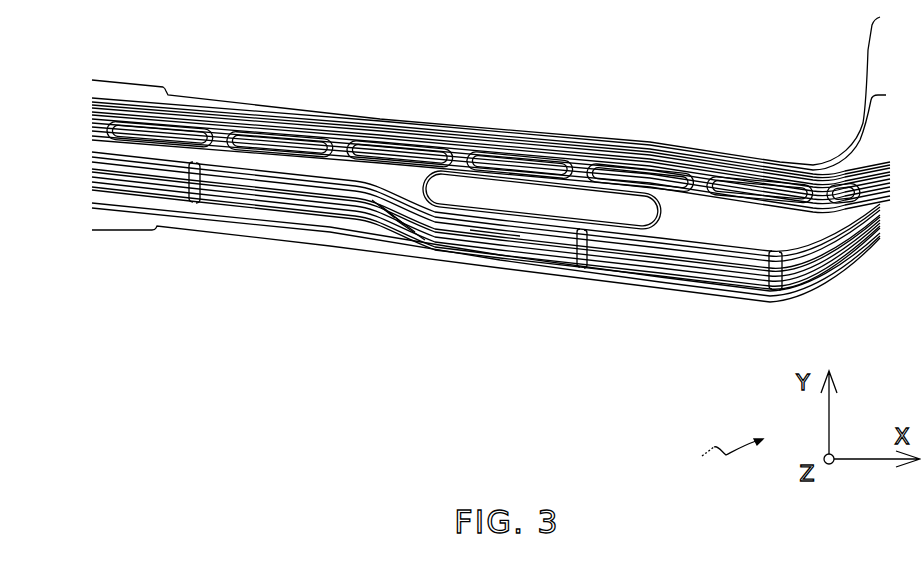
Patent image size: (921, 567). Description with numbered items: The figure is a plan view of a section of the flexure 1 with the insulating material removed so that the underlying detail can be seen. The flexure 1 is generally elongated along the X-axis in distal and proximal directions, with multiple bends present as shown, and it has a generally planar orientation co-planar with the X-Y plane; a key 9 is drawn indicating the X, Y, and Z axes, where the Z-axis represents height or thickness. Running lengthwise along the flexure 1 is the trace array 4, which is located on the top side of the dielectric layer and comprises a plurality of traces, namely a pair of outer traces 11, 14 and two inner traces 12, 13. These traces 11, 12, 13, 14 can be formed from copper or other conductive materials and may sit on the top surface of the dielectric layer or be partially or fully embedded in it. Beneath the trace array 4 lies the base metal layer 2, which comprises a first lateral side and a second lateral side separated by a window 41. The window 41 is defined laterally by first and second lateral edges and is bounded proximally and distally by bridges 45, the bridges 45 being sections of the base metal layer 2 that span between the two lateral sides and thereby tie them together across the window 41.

The flexure 1 is at (491, 232).
The base metal layer 2 is at (717, 297).
The trace array 4 is at (566, 140).
The key 9 is at (724, 456).
The outer trace 11 is at (382, 228).
The inner trace 12 is at (397, 215).
The inner trace 13 is at (412, 222).
The outer trace 14 is at (440, 235).
The window 41 is at (483, 258).
The bridges 45 is at (380, 230).